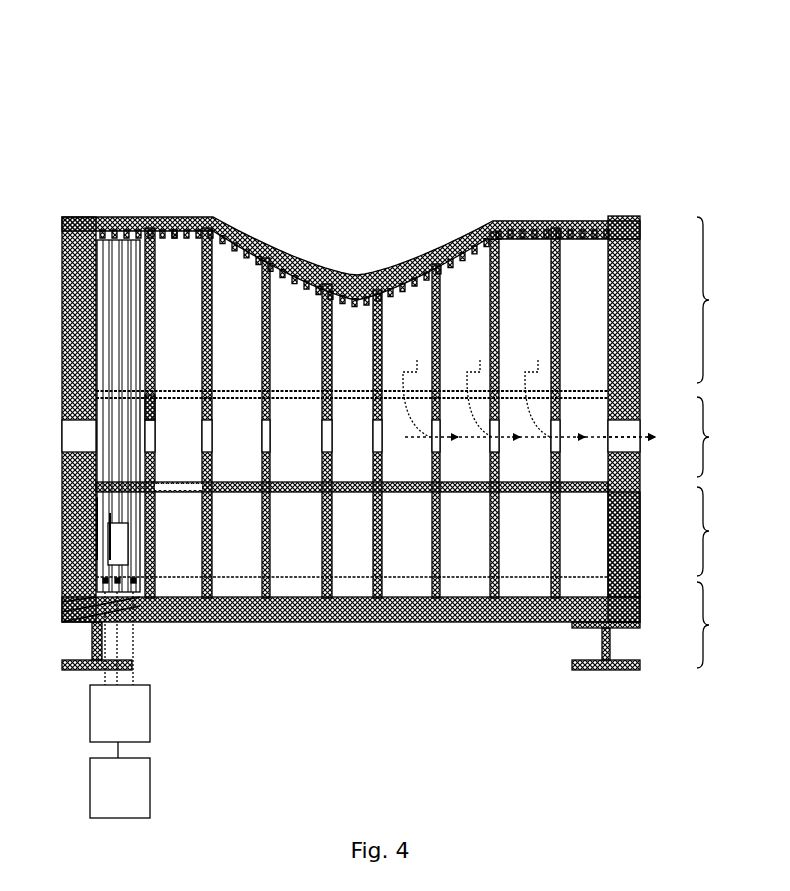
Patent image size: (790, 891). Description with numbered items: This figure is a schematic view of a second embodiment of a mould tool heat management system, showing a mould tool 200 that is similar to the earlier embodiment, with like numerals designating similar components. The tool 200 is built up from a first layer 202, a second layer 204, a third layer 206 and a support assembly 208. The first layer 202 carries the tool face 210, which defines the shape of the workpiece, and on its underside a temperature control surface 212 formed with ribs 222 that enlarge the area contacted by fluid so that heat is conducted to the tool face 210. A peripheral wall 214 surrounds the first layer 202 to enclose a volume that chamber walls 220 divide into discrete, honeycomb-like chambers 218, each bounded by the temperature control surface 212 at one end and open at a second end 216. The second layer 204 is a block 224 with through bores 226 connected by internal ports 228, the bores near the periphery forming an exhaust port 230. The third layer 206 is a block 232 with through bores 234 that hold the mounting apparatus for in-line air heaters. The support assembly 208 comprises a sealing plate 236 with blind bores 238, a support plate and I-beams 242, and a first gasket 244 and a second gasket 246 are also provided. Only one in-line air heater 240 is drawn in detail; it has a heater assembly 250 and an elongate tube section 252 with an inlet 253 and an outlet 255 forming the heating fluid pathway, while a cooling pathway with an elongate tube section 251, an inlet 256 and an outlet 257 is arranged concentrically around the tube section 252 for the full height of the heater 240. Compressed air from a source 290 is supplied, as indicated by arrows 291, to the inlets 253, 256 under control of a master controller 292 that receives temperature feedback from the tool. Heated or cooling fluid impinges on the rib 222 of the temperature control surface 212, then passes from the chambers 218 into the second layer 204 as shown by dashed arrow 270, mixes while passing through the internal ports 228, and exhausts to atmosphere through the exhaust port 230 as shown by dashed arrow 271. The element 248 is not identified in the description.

The mould tool 200 is at (170, 62).
The first layer 202 is at (713, 300).
The second layer 204 is at (715, 437).
The third layer 206 is at (715, 531).
The support assembly 208 is at (715, 625).
The tool face 210 is at (283, 230).
The temperature control surface 212 is at (281, 278).
The peripheral wall 214 is at (640, 248).
The open second end 216 is at (153, 390).
The chamber 218 is at (166, 330).
The chamber wall 220 is at (237, 322).
The rib 222 is at (173, 240).
The block 224 is at (640, 400).
The through bore 226 is at (166, 439).
The internal port 228 is at (212, 437).
The exhaust port 230 is at (608, 455).
The block 232 is at (624, 556).
The through bore 234 is at (166, 539).
The sealing plate 236 is at (640, 580).
The blind bore 238 is at (248, 488).
The in-line air heater 240 is at (640, 610).
The I-beam 242 is at (610, 645).
The first gasket 244 is at (640, 391).
The second gasket 246 is at (640, 488).
The heat input 248 is at (117, 207).
The heater assembly 250 is at (120, 530).
The elongate tube section 251 is at (103, 497).
The elongate tube section 252 is at (120, 513).
The inlet 253 is at (68, 620).
The outlet 255 is at (82, 245).
The inlet 256 is at (153, 396).
The outlet 257 is at (115, 253).
The dashed arrow 270 is at (529, 390).
The dashed arrow 271 is at (603, 437).
The compressed air source 290 is at (120, 721).
The arrows 291 is at (104, 640).
The master controller 292 is at (120, 788).